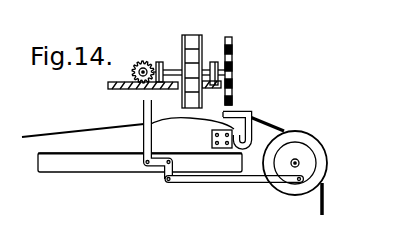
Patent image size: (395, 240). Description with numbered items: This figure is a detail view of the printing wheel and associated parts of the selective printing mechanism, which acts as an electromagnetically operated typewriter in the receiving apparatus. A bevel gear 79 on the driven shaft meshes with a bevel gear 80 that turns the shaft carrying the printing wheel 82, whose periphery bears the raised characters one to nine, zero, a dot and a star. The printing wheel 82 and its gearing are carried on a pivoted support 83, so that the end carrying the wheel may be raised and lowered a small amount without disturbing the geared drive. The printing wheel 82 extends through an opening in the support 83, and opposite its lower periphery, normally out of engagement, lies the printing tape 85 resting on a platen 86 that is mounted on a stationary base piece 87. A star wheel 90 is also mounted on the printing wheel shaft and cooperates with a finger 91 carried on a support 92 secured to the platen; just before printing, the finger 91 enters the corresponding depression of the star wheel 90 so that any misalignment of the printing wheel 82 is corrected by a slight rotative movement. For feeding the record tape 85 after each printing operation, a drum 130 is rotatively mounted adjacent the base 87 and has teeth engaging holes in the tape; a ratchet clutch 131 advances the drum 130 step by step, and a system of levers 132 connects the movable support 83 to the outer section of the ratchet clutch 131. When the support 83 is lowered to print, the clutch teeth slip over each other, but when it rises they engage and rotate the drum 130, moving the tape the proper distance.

The bevel gear 79 is at (142, 60).
The bevel gear 80 is at (158, 62).
The printing wheel 82 is at (193, 38).
The support 83 is at (108, 86).
The printing tape 85 is at (83, 130).
The platen 86 is at (158, 143).
The base piece 87 is at (114, 166).
The star wheel 90 is at (233, 47).
The finger 91 is at (236, 112).
The support 92 is at (254, 120).
The drum 130 is at (318, 157).
The ratchet clutch 131 is at (311, 170).
The system of levers 132 is at (206, 183).